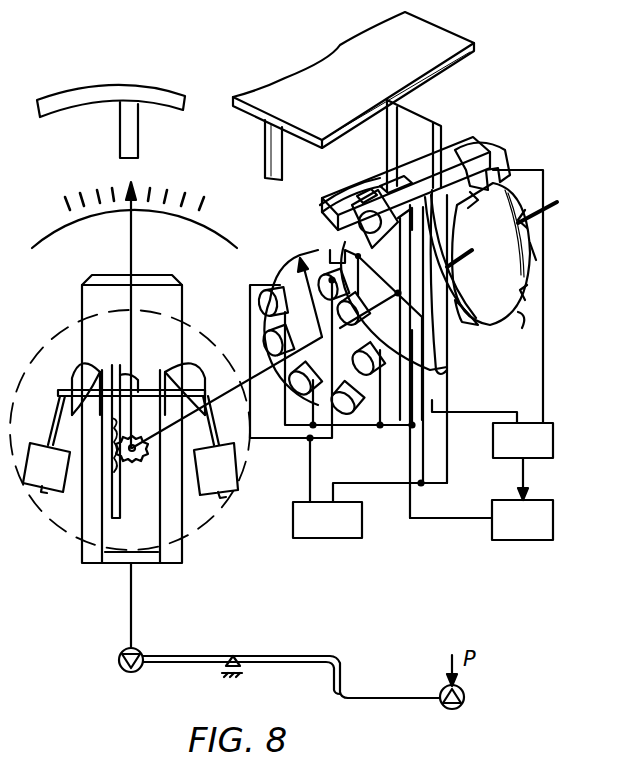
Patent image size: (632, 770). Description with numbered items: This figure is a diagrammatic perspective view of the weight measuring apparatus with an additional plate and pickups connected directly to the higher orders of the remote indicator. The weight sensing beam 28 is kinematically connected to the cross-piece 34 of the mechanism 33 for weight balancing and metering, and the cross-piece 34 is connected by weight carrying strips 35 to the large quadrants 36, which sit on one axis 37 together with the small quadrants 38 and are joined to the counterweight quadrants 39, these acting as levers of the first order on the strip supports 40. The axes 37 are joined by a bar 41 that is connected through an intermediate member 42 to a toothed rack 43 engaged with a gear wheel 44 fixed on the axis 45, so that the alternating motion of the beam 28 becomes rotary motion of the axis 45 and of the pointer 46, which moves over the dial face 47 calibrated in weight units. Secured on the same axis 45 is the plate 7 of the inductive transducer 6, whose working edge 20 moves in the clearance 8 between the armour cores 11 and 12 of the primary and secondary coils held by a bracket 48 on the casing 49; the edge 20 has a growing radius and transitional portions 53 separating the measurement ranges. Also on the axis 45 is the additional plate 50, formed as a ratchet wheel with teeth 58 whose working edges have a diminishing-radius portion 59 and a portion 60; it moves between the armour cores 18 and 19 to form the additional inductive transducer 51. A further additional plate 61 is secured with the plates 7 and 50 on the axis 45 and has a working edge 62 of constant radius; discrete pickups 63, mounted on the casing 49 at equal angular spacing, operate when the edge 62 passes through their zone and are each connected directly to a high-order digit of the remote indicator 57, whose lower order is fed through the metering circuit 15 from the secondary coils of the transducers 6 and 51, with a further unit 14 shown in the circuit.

The inductive transducer 6 is at (406, 180).
The plate 7 is at (348, 245).
The clearance 8 is at (366, 200).
The armour core 11 is at (350, 212).
The armour core 12 is at (458, 266).
The control unit 14 is at (370, 487).
The metering circuit 15 is at (492, 314).
The armour core 18 is at (440, 228).
The armour core 19 is at (490, 170).
The working edge 20 is at (447, 372).
The beam 28 is at (238, 658).
The mechanism 33 is at (80, 92).
The cross-piece 34 is at (118, 566).
The weight carrying strips 35 is at (105, 540).
The large quadrants 36 is at (78, 372).
The axis 37 is at (58, 396).
The small quadrants 38 is at (60, 392).
The counterweights 39 is at (58, 476).
The strip supports 40 is at (82, 298).
The bar 41 is at (133, 424).
The intermediate member 42 is at (140, 375).
The toothed rack 43 is at (103, 505).
The gear wheel 44 is at (256, 397).
The axis 45 is at (218, 400).
The pointer 46 is at (126, 338).
The dial face 47 is at (50, 240).
The bracket 48 is at (396, 183).
The casing 49 is at (243, 97).
The additional plate 50 is at (528, 292).
The additional inductive transducer 51 is at (476, 130).
The transitional portions 53 is at (470, 327).
The remote indicator 57 is at (481, 499).
The teeth 58 is at (500, 208).
The portion 59 is at (528, 255).
The portion 60 is at (512, 320).
The additional plate 61 is at (283, 280).
The working edge 62 is at (298, 262).
The discrete pickups 63 is at (304, 402).